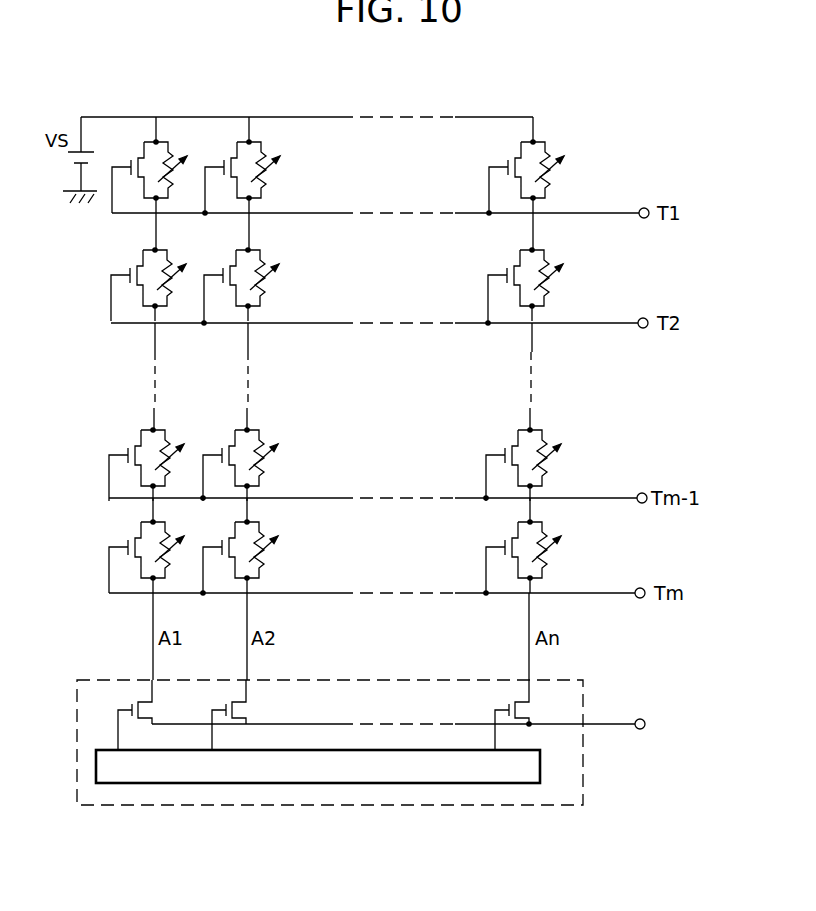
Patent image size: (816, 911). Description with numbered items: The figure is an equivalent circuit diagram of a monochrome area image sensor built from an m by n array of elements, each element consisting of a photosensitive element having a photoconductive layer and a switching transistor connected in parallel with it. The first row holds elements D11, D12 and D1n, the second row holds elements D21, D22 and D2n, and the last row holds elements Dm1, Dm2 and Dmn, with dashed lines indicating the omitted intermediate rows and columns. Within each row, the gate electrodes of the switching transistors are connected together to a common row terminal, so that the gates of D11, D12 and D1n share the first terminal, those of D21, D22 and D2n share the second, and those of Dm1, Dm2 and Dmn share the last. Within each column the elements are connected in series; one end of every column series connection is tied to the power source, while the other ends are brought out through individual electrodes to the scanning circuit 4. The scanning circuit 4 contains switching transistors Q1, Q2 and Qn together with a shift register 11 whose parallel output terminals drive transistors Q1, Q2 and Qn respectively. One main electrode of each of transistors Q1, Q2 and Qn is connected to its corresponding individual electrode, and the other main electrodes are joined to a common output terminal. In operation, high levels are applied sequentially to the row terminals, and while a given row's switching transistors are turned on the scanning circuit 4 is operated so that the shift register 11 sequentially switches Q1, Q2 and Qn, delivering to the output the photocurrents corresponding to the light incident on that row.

The shift register 11 is at (455, 784).
The scanning circuit 4 is at (403, 773).
The switching transistor Q1 is at (129, 715).
The switching transistor Q2 is at (222, 715).
The switching transistor Qn is at (505, 715).
The element D11 is at (159, 173).
The element D12 is at (252, 173).
The element D1n is at (536, 171).
The element D21 is at (158, 281).
The element D22 is at (251, 281).
The element D2n is at (535, 280).
The element Dm1 is at (159, 553).
The element Dm2 is at (252, 553).
The element Dmn is at (536, 551).